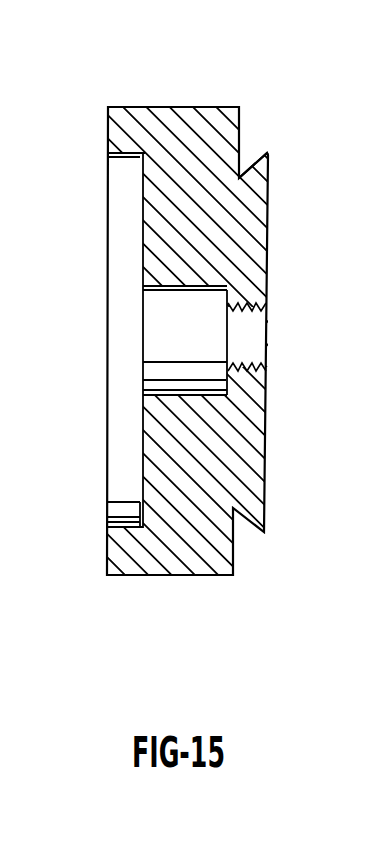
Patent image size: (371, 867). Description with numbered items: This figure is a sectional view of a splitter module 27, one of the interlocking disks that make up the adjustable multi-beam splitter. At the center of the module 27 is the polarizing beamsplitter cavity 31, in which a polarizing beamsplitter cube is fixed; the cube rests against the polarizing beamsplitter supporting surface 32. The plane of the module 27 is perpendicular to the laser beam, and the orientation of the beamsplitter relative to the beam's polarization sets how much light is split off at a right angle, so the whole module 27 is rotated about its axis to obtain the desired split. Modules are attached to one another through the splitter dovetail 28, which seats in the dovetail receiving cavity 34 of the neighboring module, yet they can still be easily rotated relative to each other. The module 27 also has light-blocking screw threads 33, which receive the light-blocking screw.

The splitter module 27 is at (200, 107).
The splitter dovetail 28 is at (267, 153).
The polarizing beamsplitter cavity 31 is at (160, 323).
The polarizing beamsplitter supporting surface 32 is at (229, 301).
The light-blocking screw threads 33 is at (266, 383).
The dovetail receiving cavity 34 is at (123, 430).